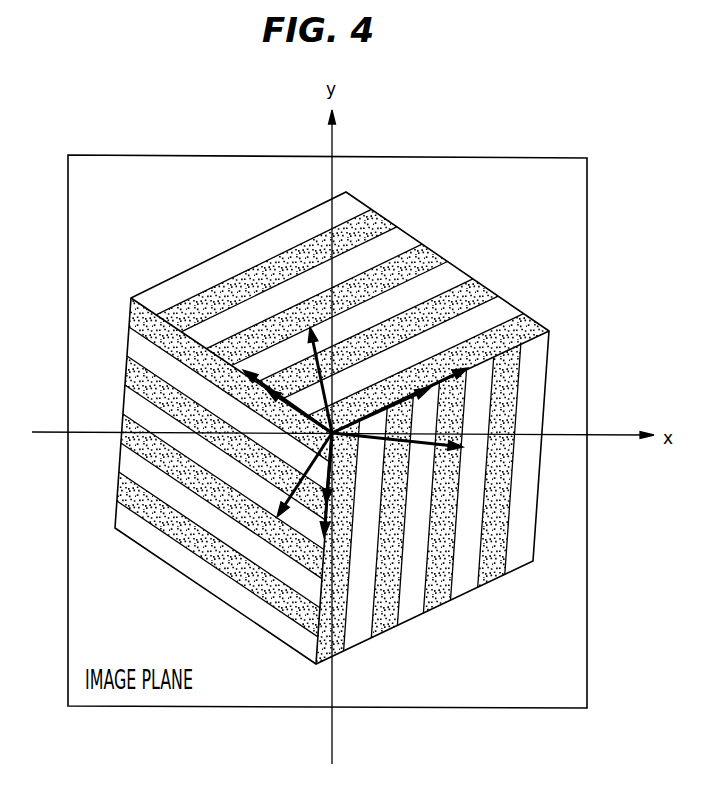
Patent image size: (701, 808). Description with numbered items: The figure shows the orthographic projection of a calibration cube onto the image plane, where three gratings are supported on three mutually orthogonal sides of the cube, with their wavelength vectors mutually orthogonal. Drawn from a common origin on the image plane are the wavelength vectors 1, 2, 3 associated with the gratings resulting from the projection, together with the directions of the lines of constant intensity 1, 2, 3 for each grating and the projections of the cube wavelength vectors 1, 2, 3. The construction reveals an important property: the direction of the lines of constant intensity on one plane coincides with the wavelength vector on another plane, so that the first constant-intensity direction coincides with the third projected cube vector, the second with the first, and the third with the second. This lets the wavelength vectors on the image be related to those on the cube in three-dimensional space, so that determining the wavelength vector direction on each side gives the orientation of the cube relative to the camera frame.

The wavelength vector 1 is at (395, 443).
The wavelength vector 2 is at (331, 372).
The wavelength vector 3 is at (288, 477).